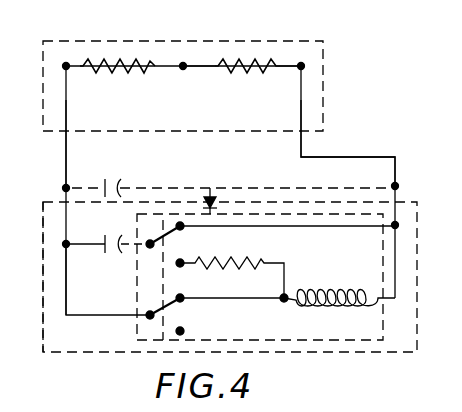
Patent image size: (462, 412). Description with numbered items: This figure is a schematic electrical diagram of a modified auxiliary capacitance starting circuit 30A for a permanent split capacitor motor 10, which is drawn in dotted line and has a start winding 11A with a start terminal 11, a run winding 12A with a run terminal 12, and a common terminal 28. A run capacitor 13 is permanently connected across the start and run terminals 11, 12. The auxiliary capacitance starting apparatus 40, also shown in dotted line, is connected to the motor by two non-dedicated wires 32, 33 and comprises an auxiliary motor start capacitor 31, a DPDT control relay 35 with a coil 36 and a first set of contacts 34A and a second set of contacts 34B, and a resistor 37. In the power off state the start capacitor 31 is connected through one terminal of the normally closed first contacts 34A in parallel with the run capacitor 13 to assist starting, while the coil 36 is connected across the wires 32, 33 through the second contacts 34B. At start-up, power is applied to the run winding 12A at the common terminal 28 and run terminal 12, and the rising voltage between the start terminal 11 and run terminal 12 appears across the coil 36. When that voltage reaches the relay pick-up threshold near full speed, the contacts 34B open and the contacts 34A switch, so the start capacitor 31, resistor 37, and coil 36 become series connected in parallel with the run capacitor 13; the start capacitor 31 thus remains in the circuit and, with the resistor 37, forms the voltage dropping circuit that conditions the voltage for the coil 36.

The motor 10 is at (330, 66).
The start terminal 11 is at (72, 66).
The start winding 11A is at (133, 66).
The run terminal 12 is at (301, 66).
The run winding 12A is at (257, 66).
The common terminal 28 is at (183, 66).
The wire 32 is at (63, 140).
The wire 33 is at (305, 152).
The run capacitor 13 is at (112, 178).
The DPDT control relay 35 is at (210, 186).
The auxiliary capacitance starting circuit 30A is at (38, 246).
The auxiliary capacitance starting apparatus 40 is at (106, 354).
The first set of contacts 34A is at (155, 230).
The second set of contacts 34B is at (165, 320).
The auxiliary motor start capacitor 31 is at (117, 258).
The resistor 37 is at (236, 252).
The coil 36 is at (345, 288).